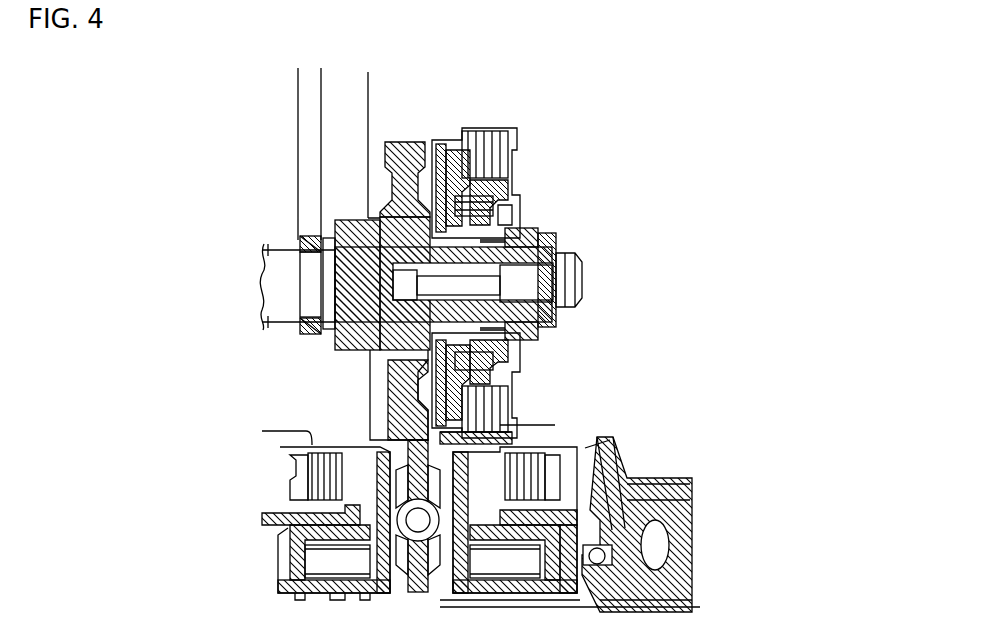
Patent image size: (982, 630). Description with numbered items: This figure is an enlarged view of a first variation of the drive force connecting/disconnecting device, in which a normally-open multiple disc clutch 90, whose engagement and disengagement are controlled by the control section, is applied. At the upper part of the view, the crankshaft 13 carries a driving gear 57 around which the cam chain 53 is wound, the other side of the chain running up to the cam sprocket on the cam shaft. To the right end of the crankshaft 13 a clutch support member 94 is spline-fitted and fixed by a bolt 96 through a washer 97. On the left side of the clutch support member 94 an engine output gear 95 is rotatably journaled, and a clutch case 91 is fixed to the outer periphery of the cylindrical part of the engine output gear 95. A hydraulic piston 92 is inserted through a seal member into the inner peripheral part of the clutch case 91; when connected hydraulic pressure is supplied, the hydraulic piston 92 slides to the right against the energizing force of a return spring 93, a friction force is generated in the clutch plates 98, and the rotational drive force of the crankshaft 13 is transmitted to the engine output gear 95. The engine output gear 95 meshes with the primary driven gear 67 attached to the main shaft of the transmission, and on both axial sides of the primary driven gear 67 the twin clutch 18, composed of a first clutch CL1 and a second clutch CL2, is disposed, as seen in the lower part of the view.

The crankshaft 13 is at (280, 270).
The twin clutch 18 is at (418, 490).
The cam chain 53 is at (300, 117).
The driving gear 57 is at (308, 238).
The primary driven gear 67 is at (370, 447).
The multiple disc clutch 90 is at (526, 142).
The clutch case 91 is at (483, 135).
The hydraulic piston 92 is at (443, 140).
The return spring 93 is at (500, 182).
The clutch support member 94 is at (512, 205).
The engine output gear 95 is at (406, 172).
The bolt 96 is at (573, 282).
The washer 97 is at (552, 328).
The clutch plates 98 is at (510, 413).
The first clutch CL1 is at (568, 474).
The second clutch CL2 is at (243, 484).